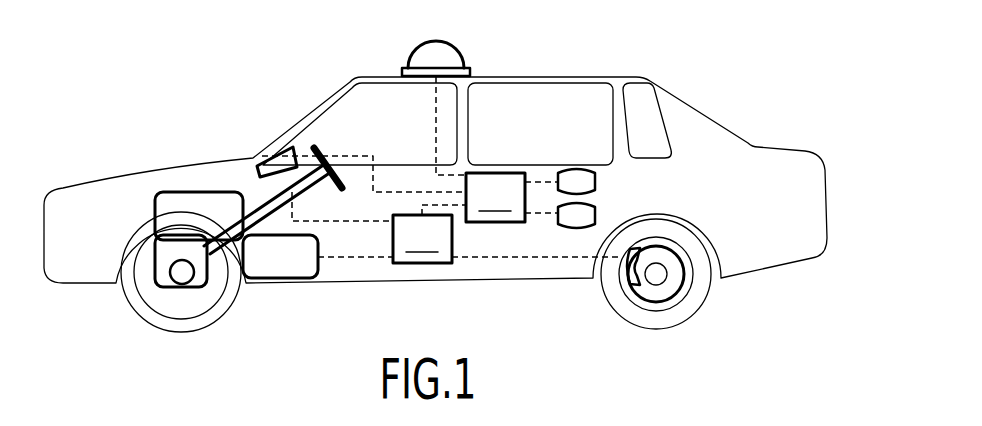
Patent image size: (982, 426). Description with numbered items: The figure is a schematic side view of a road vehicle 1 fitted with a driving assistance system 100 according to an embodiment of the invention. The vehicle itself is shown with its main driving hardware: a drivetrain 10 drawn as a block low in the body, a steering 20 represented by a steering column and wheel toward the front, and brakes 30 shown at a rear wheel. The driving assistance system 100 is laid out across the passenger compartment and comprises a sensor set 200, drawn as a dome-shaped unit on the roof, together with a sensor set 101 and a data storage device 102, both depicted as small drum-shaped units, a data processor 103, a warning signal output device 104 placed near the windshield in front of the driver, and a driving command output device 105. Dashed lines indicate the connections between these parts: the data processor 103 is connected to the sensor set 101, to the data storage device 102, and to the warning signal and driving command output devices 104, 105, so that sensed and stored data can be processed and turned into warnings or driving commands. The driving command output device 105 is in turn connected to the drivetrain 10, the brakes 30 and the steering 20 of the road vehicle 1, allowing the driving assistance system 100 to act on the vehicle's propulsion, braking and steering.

The road vehicle 1 is at (782, 157).
The drivetrain 10 is at (278, 265).
The steering 20 is at (260, 217).
The brakes 30 is at (625, 278).
The driving assistance system 100 is at (501, 141).
The sensor set 101 is at (597, 181).
The data storage device 102 is at (597, 215).
The data processor 103 is at (495, 197).
The warning signal output device 104 is at (277, 152).
The driving command output device 105 is at (422, 239).
The sensor set 200 is at (443, 58).